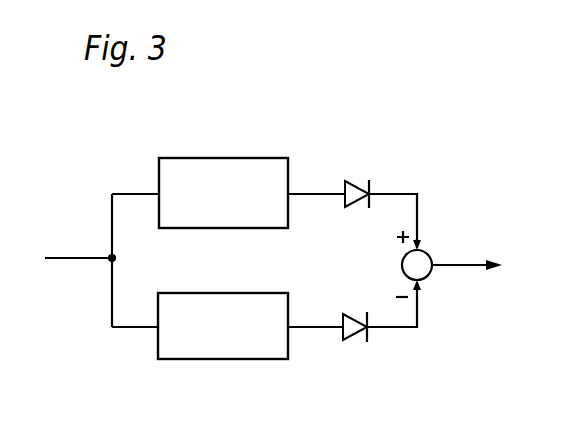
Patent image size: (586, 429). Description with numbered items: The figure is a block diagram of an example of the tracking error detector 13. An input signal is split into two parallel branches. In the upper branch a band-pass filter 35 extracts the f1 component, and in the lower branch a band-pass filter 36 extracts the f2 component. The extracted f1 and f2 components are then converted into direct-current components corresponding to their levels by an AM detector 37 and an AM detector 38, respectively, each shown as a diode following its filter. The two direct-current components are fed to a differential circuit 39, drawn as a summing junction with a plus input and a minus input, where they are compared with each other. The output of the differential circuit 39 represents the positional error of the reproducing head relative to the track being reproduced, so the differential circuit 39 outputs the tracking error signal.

The tracking error detector 13 is at (389, 133).
The band-pass filter 35 is at (252, 134).
The band-pass filter 36 is at (228, 293).
The AM detector 37 is at (357, 232).
The AM detector 38 is at (358, 378).
The differential circuit 39 is at (460, 221).